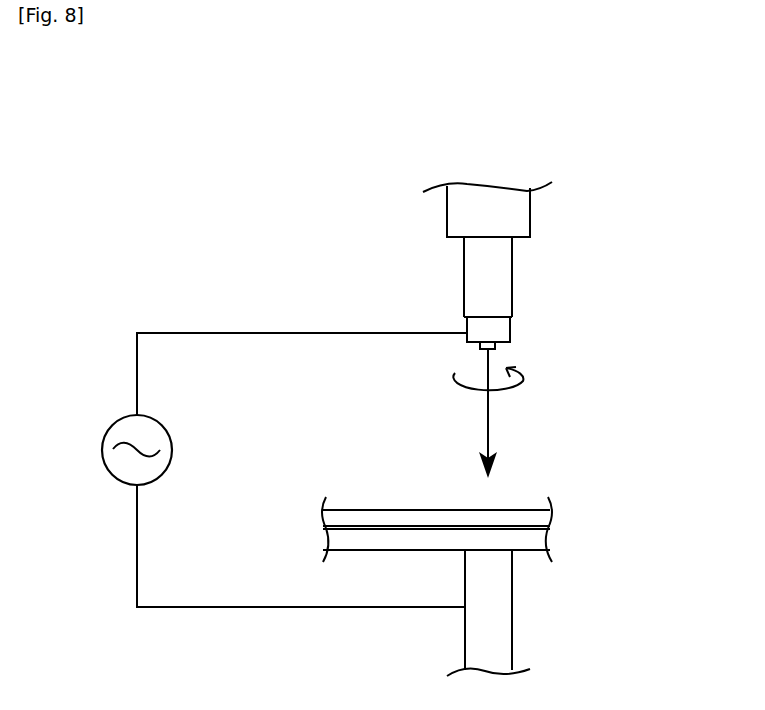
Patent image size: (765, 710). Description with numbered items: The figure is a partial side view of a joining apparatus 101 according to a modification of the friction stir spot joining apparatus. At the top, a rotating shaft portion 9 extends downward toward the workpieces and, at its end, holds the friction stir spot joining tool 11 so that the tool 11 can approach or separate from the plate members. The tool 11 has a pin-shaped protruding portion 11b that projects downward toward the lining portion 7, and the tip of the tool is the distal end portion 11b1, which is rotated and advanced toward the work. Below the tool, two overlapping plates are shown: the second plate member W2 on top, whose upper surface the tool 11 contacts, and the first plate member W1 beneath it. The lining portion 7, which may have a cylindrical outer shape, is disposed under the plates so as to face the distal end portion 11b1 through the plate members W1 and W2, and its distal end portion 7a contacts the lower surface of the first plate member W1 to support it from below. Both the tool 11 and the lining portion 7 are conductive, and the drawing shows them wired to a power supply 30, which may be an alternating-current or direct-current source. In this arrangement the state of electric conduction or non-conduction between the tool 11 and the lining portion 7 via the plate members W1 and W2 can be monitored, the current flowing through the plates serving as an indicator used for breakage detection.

The joining apparatus 101 is at (378, 107).
The rotating shaft portion 9 is at (530, 215).
The friction stir spot joining tool 11 is at (510, 331).
The protruding portion 11b is at (495, 350).
The distal end portion 11b1 is at (520, 386).
The power supply 30 is at (172, 443).
The first plate member W1 is at (550, 543).
The second plate member W2 is at (550, 513).
The lining portion 7 is at (512, 628).
The distal end portion 7a is at (500, 552).